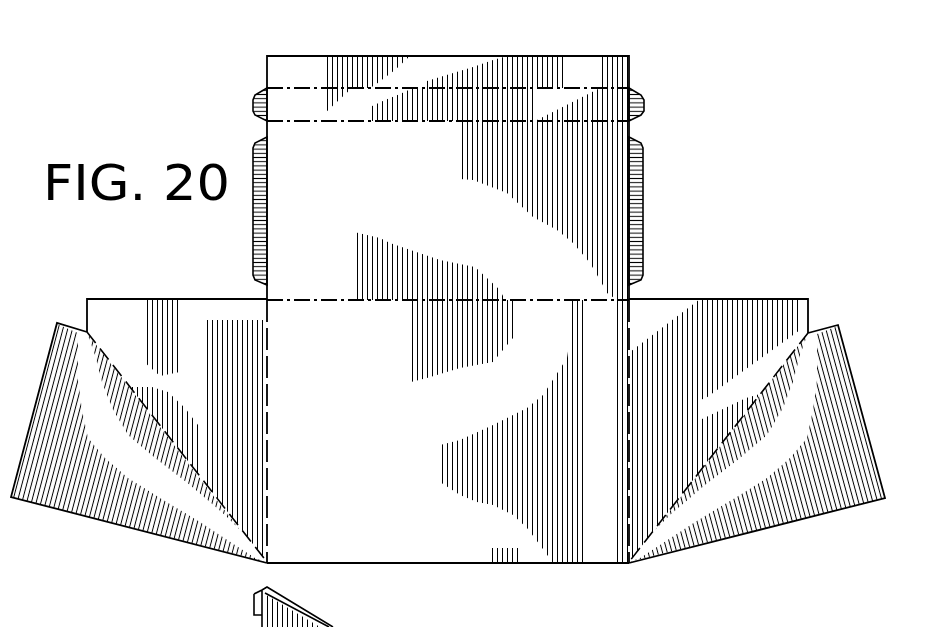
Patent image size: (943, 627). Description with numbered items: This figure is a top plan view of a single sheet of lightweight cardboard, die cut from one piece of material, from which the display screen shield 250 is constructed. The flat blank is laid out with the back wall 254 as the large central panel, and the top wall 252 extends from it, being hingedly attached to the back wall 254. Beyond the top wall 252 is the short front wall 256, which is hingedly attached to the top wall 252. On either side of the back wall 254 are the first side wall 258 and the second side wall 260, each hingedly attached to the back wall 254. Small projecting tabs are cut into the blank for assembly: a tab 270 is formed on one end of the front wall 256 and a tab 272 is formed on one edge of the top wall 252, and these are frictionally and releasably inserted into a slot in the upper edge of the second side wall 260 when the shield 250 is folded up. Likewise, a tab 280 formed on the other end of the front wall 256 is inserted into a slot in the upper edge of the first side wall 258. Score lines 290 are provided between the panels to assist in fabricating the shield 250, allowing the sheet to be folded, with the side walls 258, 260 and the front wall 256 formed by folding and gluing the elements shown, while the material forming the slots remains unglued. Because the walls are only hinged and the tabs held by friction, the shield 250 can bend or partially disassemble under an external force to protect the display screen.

The display screen shield 250 is at (742, 82).
The top wall 252 is at (535, 230).
The back wall 254 is at (468, 525).
The front wall 256 is at (552, 105).
The first side wall 258 is at (177, 327).
The second side wall 260 is at (767, 497).
The tab 270 is at (637, 107).
The tab 272 is at (637, 208).
The tab 280 is at (253, 602).
The score lines 290 is at (631, 364).